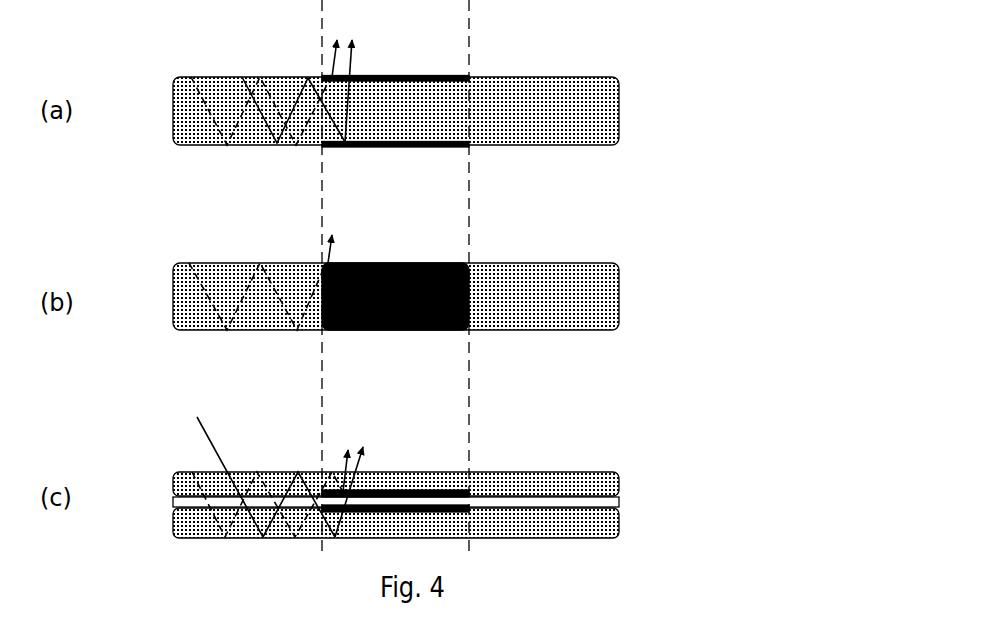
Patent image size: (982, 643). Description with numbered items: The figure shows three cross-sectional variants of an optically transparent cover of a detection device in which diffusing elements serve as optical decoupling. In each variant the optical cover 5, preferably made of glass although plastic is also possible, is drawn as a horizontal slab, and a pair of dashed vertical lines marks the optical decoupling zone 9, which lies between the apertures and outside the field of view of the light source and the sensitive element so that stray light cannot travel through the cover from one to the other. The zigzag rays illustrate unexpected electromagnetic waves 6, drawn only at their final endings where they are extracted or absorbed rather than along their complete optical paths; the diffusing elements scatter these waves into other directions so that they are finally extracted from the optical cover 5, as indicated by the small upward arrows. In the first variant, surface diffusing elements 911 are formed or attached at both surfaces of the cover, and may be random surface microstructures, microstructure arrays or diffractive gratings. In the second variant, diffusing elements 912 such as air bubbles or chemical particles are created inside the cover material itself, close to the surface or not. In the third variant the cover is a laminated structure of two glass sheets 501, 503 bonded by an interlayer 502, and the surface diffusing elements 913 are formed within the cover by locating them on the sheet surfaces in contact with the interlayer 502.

The optical cover 5 is at (460, 309).
The final endings of light rays 6 is at (262, 122).
The optical decoupling zone 9 is at (447, 25).
The surface diffusing elements 911 is at (417, 142).
The diffusing elements inside the cover material 912 is at (372, 262).
The surface diffusing elements within laminated cover 913 is at (407, 507).
The glass sheet 501 is at (610, 479).
The interlayer 502 is at (608, 502).
The glass sheet 503 is at (610, 527).